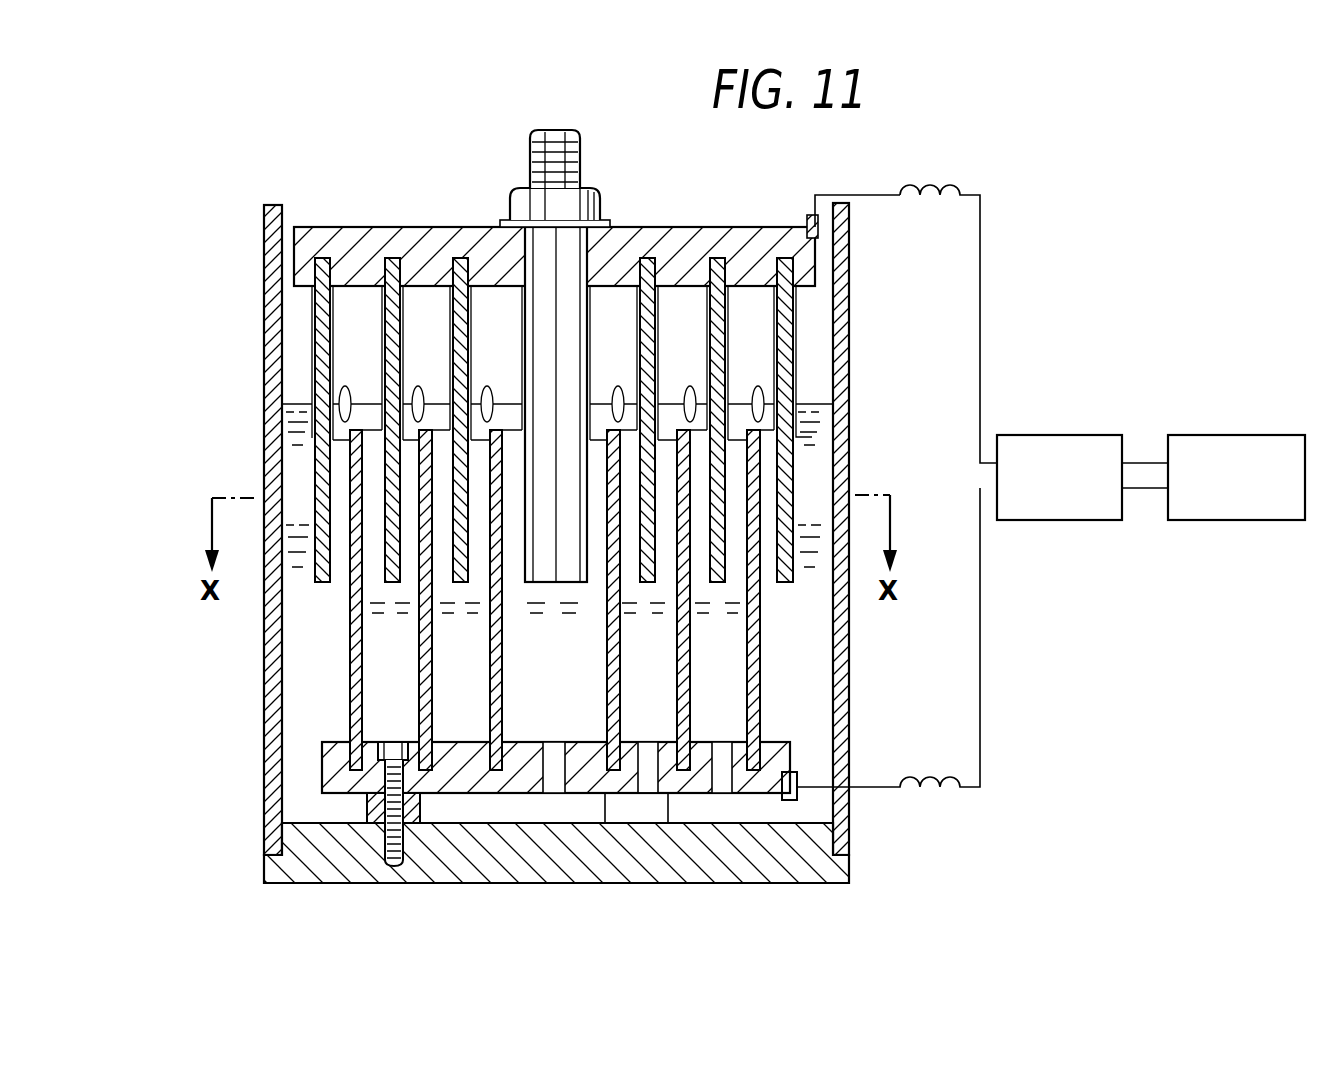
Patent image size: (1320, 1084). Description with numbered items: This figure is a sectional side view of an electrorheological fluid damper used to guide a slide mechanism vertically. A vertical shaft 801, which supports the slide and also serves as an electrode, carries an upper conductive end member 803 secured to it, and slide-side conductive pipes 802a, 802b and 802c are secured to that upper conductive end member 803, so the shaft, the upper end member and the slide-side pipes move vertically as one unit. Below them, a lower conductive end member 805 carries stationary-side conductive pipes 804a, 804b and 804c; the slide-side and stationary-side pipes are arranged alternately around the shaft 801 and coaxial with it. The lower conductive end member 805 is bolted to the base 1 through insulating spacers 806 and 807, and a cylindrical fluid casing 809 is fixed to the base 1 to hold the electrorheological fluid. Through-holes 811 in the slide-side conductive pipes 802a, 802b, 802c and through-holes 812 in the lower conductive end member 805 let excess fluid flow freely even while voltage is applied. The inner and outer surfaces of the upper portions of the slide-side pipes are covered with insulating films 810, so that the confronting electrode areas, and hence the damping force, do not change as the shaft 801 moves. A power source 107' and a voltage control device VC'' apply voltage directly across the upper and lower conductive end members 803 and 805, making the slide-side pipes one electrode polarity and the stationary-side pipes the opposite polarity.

The base 1 is at (441, 860).
The vertical shaft 801 is at (553, 298).
The slide-side conductive pipe 802a is at (647, 313).
The slide-side conductive pipe 802b is at (717, 300).
The slide-side conductive pipe 802c is at (786, 262).
The upper conductive end member 803 is at (418, 248).
The stationary-side conductive pipe 804a is at (352, 632).
The stationary-side conductive pipe 804b is at (422, 660).
The stationary-side conductive pipe 804c is at (492, 705).
The lower conductive end member 805 is at (782, 756).
The insulating spacer 806 is at (373, 778).
The insulating spacer 807 is at (367, 805).
The cylindrical fluid casing 809 is at (270, 372).
The insulating film 810 is at (797, 392).
The through-hole 811 is at (800, 389).
The through-hole 812 is at (722, 778).
The voltage control device VC'' is at (1059, 451).
The power source 107' is at (1236, 451).